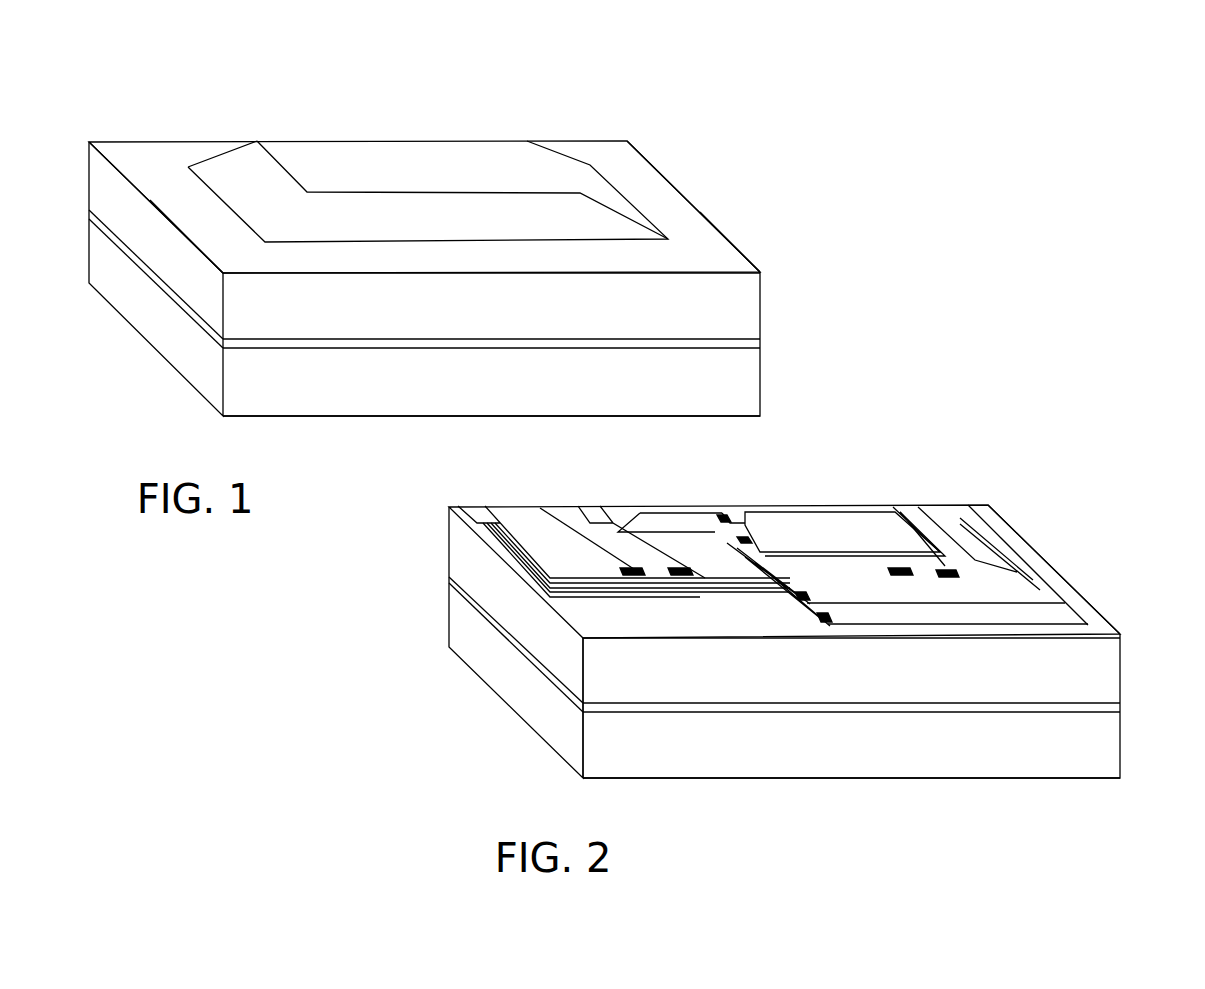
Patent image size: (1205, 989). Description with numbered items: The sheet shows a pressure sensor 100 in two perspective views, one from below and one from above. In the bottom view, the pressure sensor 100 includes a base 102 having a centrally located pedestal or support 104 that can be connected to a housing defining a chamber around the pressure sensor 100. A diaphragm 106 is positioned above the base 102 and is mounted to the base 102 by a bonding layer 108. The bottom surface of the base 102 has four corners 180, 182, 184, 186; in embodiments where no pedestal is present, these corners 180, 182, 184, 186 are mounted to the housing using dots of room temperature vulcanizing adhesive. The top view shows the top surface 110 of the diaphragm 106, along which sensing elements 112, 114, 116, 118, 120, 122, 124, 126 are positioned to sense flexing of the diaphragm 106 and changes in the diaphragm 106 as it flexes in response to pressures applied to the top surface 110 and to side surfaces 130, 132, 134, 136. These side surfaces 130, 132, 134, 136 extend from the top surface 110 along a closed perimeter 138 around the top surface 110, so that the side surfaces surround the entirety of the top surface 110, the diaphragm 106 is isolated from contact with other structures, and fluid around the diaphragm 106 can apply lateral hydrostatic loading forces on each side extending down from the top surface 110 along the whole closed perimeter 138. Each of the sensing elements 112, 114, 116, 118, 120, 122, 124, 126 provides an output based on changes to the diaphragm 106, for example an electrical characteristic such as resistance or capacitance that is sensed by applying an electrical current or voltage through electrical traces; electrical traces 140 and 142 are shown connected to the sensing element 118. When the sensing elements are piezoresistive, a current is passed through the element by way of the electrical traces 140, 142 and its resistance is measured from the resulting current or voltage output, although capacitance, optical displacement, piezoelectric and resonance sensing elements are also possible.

In FIG. 1, the pressure sensor 100 is at (702, 153).
In FIG. 2, the pressure sensor 100 is at (1028, 465).
In FIG. 1, the base 102 is at (752, 305).
In FIG. 2, the base 102 is at (483, 670).
In FIG. 1, the pedestal or support 104 is at (382, 173).
In FIG. 1, the diaphragm 106 is at (752, 403).
In FIG. 2, the diaphragm 106 is at (457, 550).
In FIG. 1, the bonding layer 108 is at (752, 342).
In FIG. 2, the bonding layer 108 is at (482, 610).
In FIG. 2, the top surface 110 is at (852, 523).
In FIG. 2, the sensing element 112 is at (722, 515).
In FIG. 2, the sensing element 114 is at (746, 537).
In FIG. 2, the sensing element 116 is at (680, 578).
In FIG. 2, the sensing element 118 is at (632, 577).
In FIG. 2, the sensing element 120 is at (802, 600).
In FIG. 2, the sensing element 122 is at (827, 624).
In FIG. 2, the sensing element 124 is at (947, 578).
In FIG. 2, the sensing element 126 is at (893, 577).
In FIG. 2, the side surface 130 is at (575, 657).
In FIG. 2, the side surface 132 is at (693, 698).
In FIG. 2, the side surface 134 is at (583, 505).
In FIG. 2, the side surface 136 is at (1082, 594).
In FIG. 2, the closed perimeter 138 is at (1118, 630).
In FIG. 2, the electrical trace 140 is at (497, 523).
In FIG. 2, the electrical trace 142 is at (486, 521).
In FIG. 1, the corner 180 is at (738, 263).
In FIG. 1, the corner 182 is at (623, 147).
In FIG. 1, the corner 184 is at (113, 150).
In FIG. 1, the corner 186 is at (223, 263).